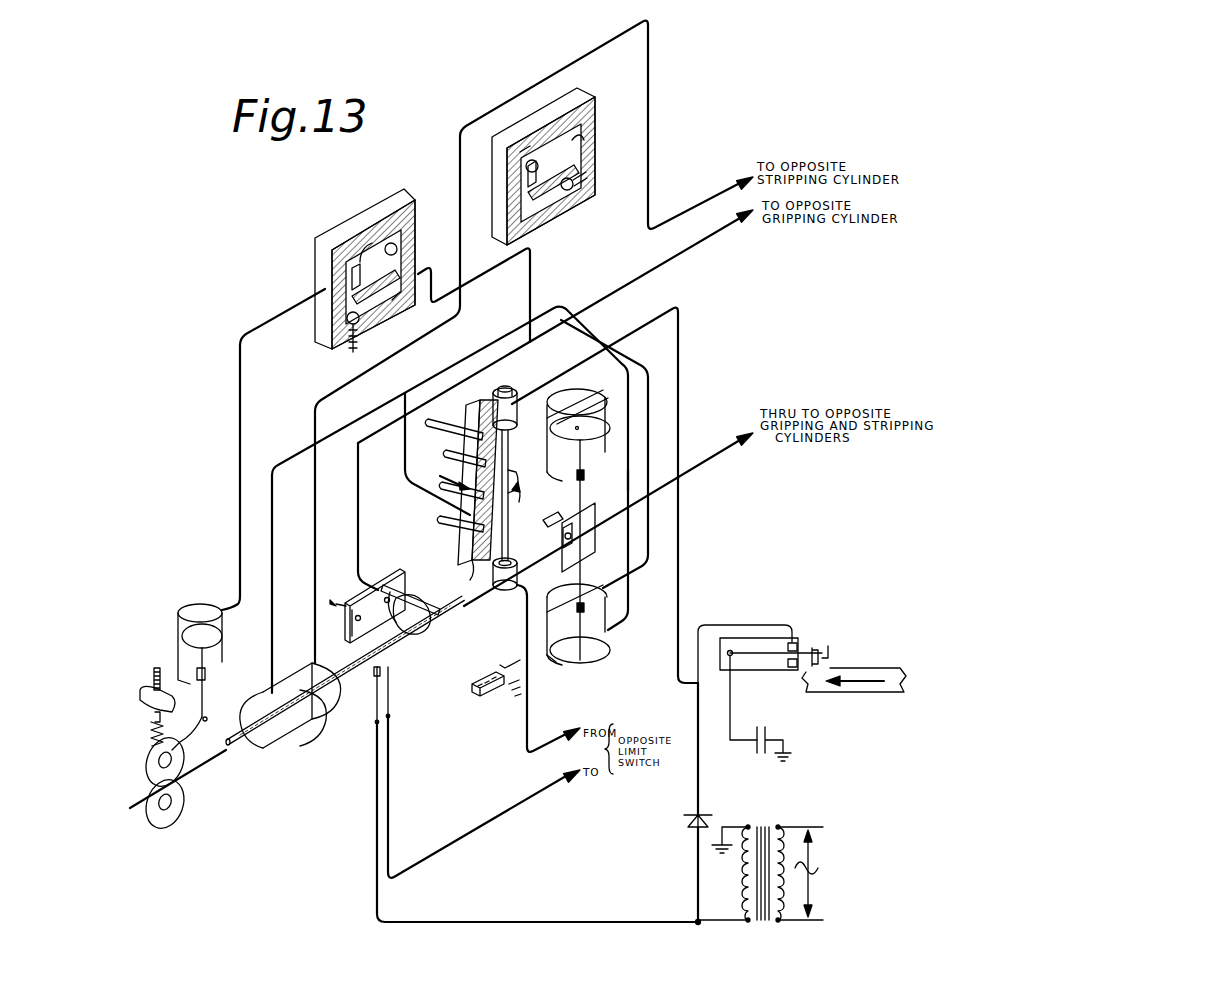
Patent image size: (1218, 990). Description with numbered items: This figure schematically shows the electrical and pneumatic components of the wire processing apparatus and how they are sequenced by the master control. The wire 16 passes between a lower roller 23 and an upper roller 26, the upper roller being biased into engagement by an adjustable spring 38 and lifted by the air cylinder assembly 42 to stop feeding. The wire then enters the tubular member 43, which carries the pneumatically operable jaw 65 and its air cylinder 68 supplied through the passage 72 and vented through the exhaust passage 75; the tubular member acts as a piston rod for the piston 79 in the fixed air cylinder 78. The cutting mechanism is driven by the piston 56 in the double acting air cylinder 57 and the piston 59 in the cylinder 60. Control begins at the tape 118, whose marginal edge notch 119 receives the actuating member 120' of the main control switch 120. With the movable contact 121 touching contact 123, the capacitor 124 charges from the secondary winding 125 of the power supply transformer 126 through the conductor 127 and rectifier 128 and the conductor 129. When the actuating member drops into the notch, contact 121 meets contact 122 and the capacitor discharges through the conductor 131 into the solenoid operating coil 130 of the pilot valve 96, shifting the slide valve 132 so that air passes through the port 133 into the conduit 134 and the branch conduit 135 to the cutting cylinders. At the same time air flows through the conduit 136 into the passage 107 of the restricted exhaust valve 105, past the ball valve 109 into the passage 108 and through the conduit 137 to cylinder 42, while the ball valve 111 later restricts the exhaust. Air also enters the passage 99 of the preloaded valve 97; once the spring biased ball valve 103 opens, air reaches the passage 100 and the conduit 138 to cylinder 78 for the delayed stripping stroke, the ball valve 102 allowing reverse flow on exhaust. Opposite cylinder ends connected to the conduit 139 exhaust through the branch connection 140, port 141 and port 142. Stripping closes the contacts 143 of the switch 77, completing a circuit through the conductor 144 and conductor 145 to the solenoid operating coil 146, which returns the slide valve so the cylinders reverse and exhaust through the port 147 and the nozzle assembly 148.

The wire 16 is at (702, 460).
The lower wire engaging roller 23 is at (158, 822).
The upper roller 26 is at (148, 770).
The adjustable spring 38 is at (148, 740).
The air cylinder assembly 42 is at (178, 640).
The tubular member 43 is at (360, 680).
The piston 56 is at (598, 420).
The double acting air cylinder 57 is at (562, 480).
The piston 59 is at (600, 658).
The double acting air cylinder 60 is at (540, 672).
The pneumatically operable jaw 65 is at (432, 612).
The air cylinder 68 is at (404, 584).
The passage 72 is at (374, 628).
The exhaust passage 75 is at (358, 620).
The switch 77 is at (392, 667).
The air cylinder 78 is at (296, 668).
The piston 79 is at (328, 728).
The pilot valve 96 is at (519, 504).
The preloaded valve 97 is at (603, 103).
The passage 99 is at (524, 172).
The passage 100 is at (586, 134).
The ball valve 102 is at (522, 148).
The ball valve 103 is at (572, 200).
The restricted exhaust valve 105 is at (417, 211).
The passage 107 is at (396, 304).
The passage 108 is at (366, 232).
The ball valve 109 is at (398, 246).
The ball valve 111 is at (360, 328).
The tape 118 is at (874, 690).
The marginal edge notch 119 is at (830, 666).
The main control switch 120 is at (778, 640).
The actuating member 120' is at (843, 642).
The movable contact 121 is at (786, 661).
The contact 122 is at (790, 673).
The contact 123 is at (786, 647).
The capacitor 124 is at (762, 758).
The secondary winding 125 is at (742, 888).
The power supply transformer 126 is at (766, 930).
The conductor 127 is at (690, 870).
The rectifier 128 is at (686, 826).
The conductor 129 is at (734, 705).
The solenoid operating coil 130 is at (490, 388).
The conductor 131 is at (680, 542).
The slide valve 132 is at (484, 562).
The port 133 is at (468, 434).
The conduit 134 is at (438, 414).
The branch conduit 135 is at (628, 482).
The conduit 136 is at (530, 296).
The conduit 137 is at (268, 312).
The conduit 138 is at (544, 86).
The conduit 139 is at (272, 470).
The branch connection 140 is at (408, 477).
The port 141 is at (468, 524).
The port 142 is at (453, 487).
The contacts 143 is at (390, 690).
The conductor 144 is at (548, 924).
The conductor 145 is at (516, 738).
The solenoid operating coil 146 is at (506, 597).
The port 147 is at (466, 460).
The nozzle assembly 148 is at (556, 512).